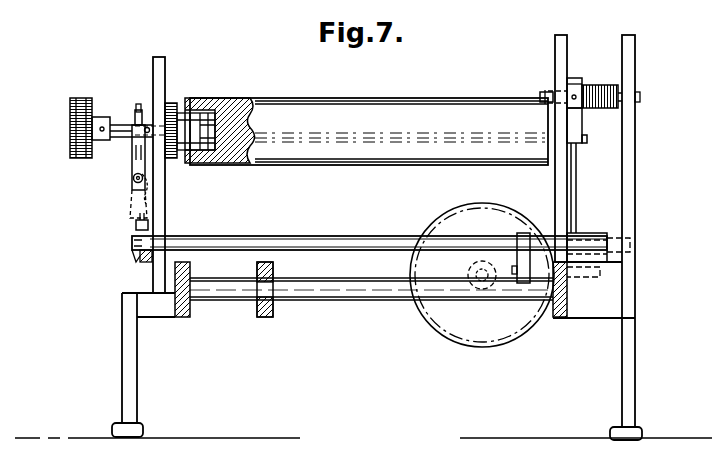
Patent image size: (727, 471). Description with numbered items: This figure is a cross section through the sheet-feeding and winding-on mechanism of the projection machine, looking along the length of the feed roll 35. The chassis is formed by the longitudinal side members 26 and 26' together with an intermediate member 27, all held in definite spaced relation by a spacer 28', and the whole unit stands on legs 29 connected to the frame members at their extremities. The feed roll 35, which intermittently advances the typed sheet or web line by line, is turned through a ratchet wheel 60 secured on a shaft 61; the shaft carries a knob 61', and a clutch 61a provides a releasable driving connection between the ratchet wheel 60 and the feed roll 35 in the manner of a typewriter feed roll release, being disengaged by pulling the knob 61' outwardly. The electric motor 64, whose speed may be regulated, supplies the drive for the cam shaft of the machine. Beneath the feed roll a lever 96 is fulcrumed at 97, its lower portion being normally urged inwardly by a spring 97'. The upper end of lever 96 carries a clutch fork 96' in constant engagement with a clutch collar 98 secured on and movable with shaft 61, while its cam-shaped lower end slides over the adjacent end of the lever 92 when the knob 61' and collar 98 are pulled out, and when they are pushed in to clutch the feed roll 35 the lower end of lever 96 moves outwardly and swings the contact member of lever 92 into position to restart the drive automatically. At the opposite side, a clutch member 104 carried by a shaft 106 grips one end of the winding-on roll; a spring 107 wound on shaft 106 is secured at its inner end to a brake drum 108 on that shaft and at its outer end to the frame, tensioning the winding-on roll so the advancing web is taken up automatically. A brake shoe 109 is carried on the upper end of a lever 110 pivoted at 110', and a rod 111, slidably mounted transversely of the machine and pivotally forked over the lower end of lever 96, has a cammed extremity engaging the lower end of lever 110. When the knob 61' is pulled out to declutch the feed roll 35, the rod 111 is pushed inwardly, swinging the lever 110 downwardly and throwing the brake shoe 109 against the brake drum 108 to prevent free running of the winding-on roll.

The longitudinal side member 26 is at (190, 309).
The longitudinal side member 26' is at (568, 309).
The intermediate member 27 is at (264, 316).
The spacer 28' is at (371, 307).
The legs 29 is at (122, 366).
The feed roll 35 is at (328, 80).
The ratchet wheel 60 is at (170, 100).
The shaft 61 is at (131, 144).
The knob 61' is at (70, 128).
The clutch 61a is at (212, 100).
The electric motor 64 is at (452, 320).
The lever 92 is at (146, 265).
The lever 96 is at (113, 171).
The clutch fork 96' is at (123, 103).
The fulcrum 97 is at (113, 194).
The spring 97' is at (114, 222).
The clutch collar 98 is at (139, 104).
The clutch member 104 is at (541, 94).
The shaft 106 is at (547, 92).
The spring 107 is at (605, 88).
The brake drum 108 is at (573, 80).
The brake shoe 109 is at (575, 130).
The lever 110 is at (628, 188).
The pivot 110' is at (638, 151).
The rod 111 is at (354, 238).